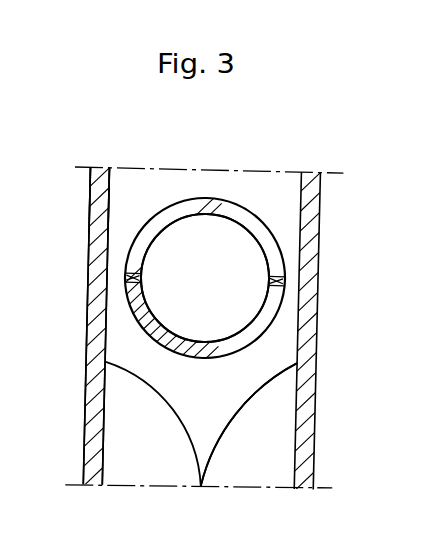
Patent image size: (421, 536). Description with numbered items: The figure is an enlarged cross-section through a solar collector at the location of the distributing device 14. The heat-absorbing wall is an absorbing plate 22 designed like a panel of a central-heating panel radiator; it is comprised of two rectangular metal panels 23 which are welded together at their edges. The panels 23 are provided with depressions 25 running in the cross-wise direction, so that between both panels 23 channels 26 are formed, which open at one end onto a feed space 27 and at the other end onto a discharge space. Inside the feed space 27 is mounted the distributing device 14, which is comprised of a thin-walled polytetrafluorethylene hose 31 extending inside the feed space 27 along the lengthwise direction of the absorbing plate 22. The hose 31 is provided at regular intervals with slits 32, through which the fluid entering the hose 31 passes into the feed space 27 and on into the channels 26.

The distributing device 14 is at (280, 313).
The absorbing plate 22 is at (84, 315).
The rectangular metal panels 23 is at (98, 420).
The depressions 25 is at (233, 419).
The channels 26 is at (283, 399).
The feed space 27 is at (123, 201).
The hose 31 is at (243, 209).
The slits 32 is at (166, 259).